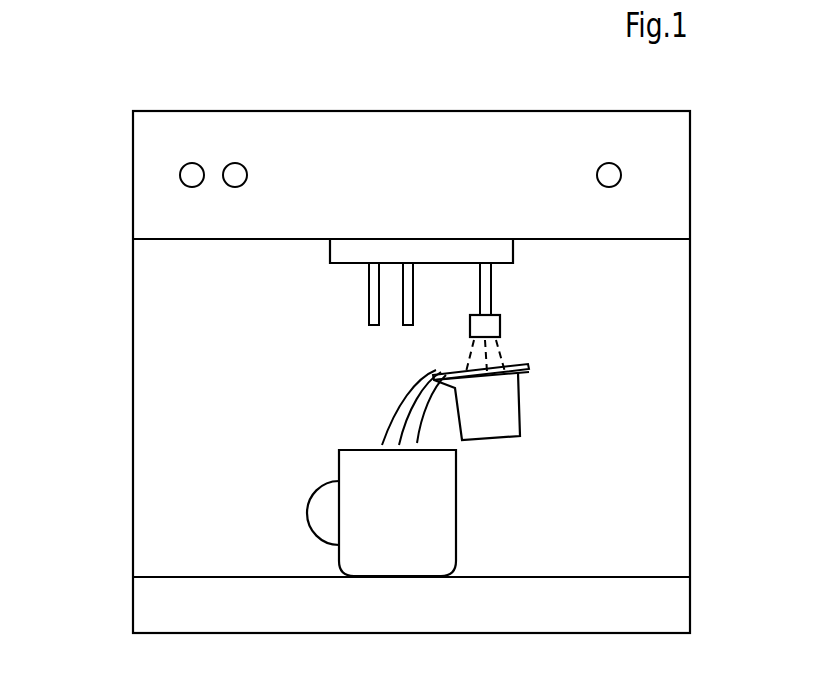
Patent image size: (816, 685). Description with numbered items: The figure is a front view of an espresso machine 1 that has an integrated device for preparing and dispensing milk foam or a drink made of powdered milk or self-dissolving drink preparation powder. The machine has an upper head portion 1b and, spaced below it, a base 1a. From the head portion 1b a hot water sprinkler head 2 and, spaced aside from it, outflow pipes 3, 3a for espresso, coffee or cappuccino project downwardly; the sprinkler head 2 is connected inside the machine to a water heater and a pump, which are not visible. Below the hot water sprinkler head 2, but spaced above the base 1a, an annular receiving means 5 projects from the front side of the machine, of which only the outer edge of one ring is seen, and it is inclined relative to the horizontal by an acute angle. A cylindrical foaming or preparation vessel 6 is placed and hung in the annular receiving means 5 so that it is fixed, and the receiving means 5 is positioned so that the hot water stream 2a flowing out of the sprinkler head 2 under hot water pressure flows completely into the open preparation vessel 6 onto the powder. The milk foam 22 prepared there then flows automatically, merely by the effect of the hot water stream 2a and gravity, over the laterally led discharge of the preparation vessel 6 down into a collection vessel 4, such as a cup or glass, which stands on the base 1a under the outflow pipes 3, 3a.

The espresso machine 1 is at (92, 197).
The base 1a is at (160, 605).
The head portion 1b is at (168, 137).
The hot water sprinkler head 2 is at (503, 332).
The hot water stream 2a is at (500, 345).
The outflow pipe 3 is at (373, 281).
The outflow pipe 3a is at (241, 327).
The collection vessel 4 is at (377, 502).
The annular receiving means 5 is at (527, 369).
The preparation vessel 6 is at (545, 413).
The milk foam 22 is at (388, 428).